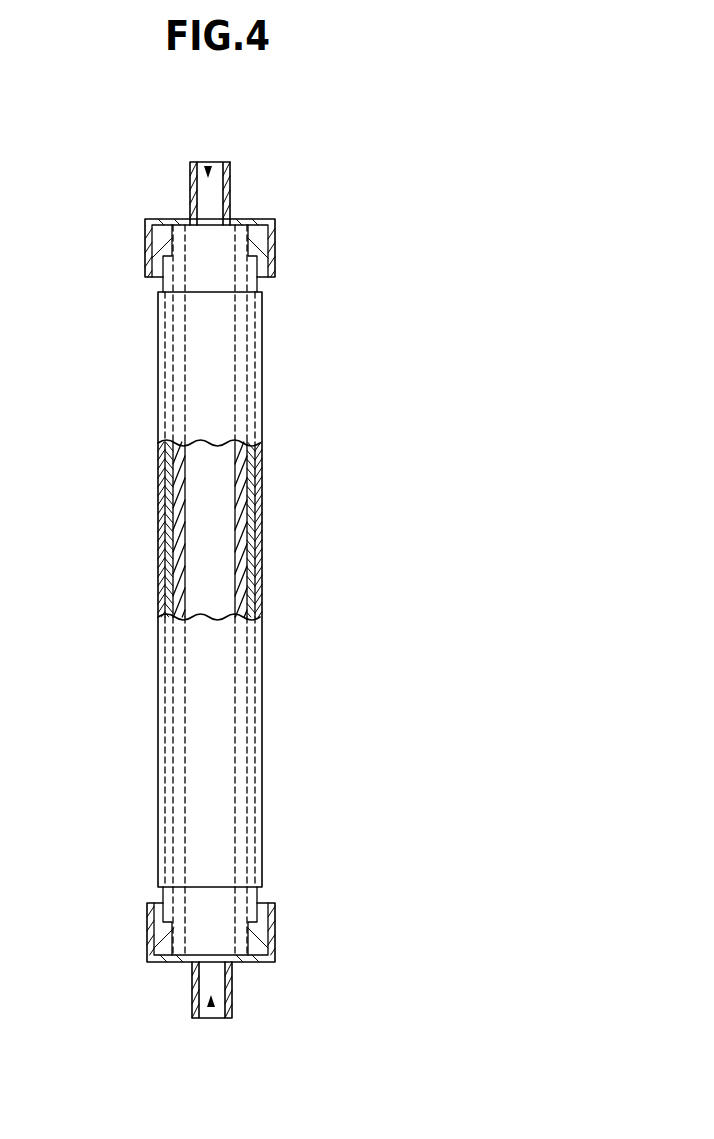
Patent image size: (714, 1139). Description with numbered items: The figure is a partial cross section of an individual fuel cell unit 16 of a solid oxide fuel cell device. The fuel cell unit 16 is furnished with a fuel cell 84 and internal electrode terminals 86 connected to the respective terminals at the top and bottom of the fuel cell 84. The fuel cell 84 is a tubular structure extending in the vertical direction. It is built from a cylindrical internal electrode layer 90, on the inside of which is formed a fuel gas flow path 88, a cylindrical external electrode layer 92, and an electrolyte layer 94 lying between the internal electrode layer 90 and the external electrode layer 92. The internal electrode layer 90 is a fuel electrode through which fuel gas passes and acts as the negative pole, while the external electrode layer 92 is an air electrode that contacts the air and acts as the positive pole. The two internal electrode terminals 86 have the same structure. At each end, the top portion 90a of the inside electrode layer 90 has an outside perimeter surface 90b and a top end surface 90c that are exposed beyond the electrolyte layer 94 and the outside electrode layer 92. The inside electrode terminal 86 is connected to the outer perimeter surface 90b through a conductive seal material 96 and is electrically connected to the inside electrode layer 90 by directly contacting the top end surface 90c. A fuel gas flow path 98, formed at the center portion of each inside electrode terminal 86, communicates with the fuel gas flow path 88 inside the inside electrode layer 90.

The fuel cell unit 16 is at (331, 333).
The fuel cell 84 is at (262, 412).
The internal electrode terminal 86 is at (277, 228).
The fuel gas flow path 88 is at (224, 537).
The internal electrode layer 90 is at (240, 463).
The top portion 90a is at (299, 594).
The outside perimeter surface 90b is at (262, 243).
The top end surface 90c is at (243, 220).
The external electrode layer 92 is at (261, 536).
The electrolyte layer 94 is at (250, 493).
The conductive seal material 96 is at (160, 243).
The fuel gas flow path 98 is at (208, 170).